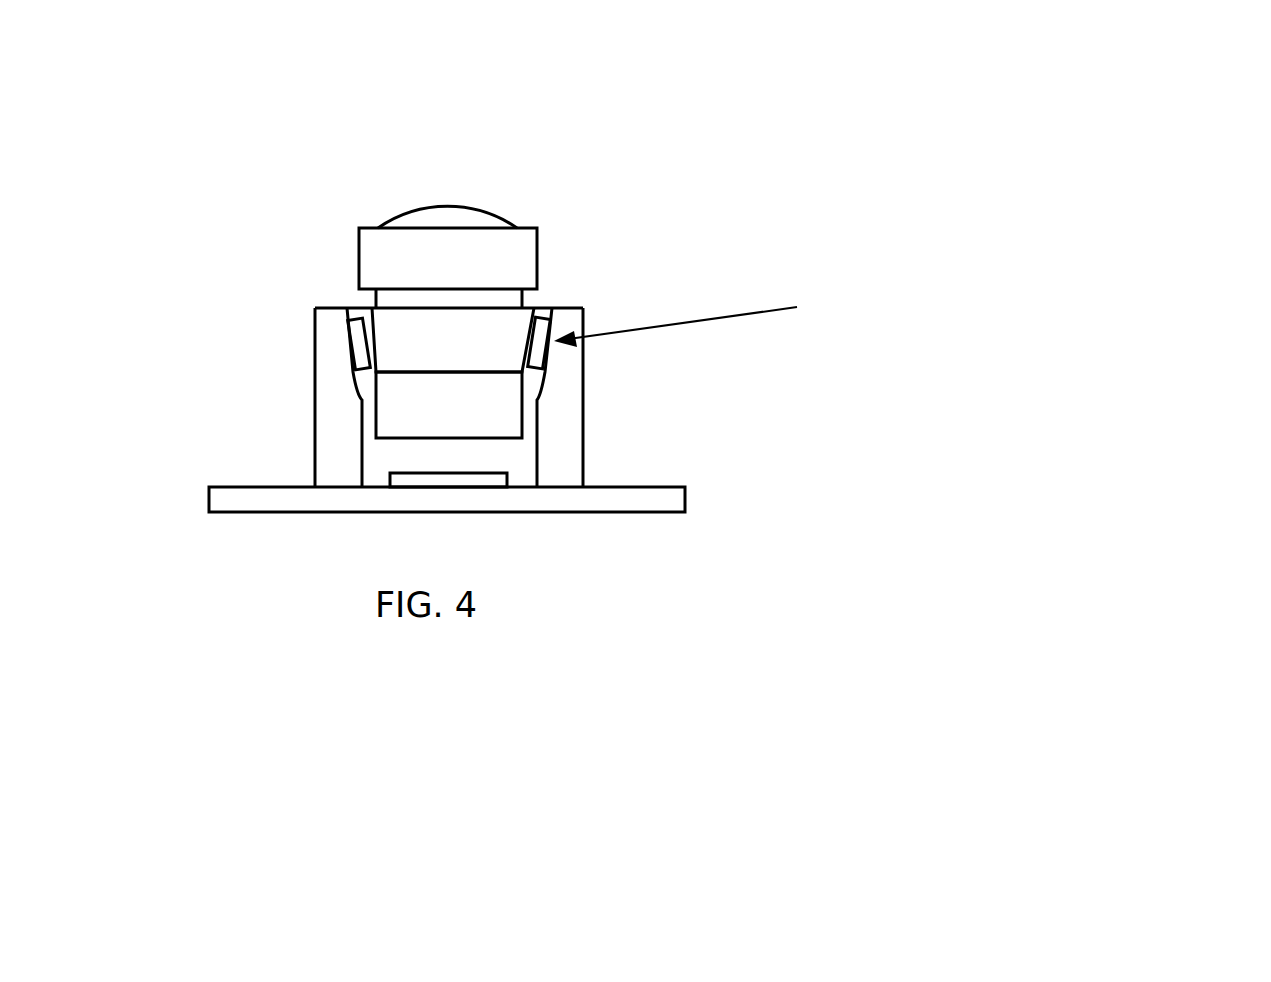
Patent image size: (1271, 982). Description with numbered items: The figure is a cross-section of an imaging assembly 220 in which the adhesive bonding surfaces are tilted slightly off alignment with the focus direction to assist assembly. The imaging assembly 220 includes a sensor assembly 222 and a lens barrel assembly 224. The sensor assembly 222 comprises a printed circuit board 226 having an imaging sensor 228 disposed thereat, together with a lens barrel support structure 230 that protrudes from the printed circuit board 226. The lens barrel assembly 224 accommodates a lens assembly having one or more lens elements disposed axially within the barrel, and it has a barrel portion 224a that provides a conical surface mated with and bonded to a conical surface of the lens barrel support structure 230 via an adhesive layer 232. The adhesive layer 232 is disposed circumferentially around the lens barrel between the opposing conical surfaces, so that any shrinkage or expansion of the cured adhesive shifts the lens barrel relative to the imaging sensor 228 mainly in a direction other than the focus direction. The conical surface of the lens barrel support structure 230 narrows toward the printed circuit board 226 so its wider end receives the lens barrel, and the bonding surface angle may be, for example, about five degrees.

The imaging assembly 220 is at (568, 147).
The sensor assembly 222 is at (1048, 598).
The lens barrel assembly 224 is at (553, 251).
The barrel portion 224a is at (383, 322).
The printed circuit board 226 is at (687, 498).
The imaging sensor 228 is at (470, 483).
The lens barrel support structure 230 is at (555, 425).
The adhesive layer 232 is at (553, 311).